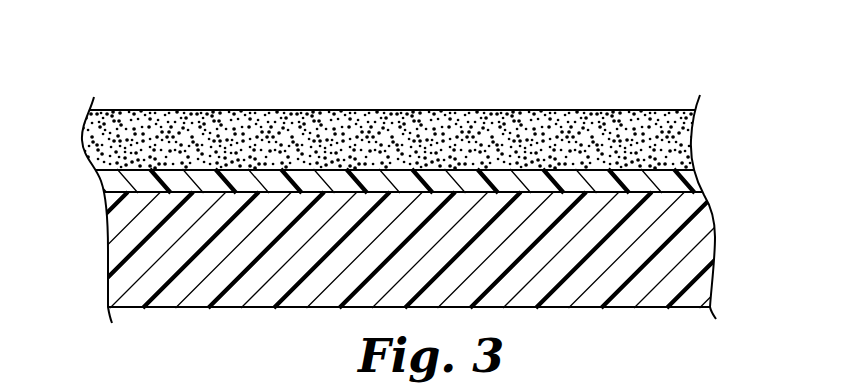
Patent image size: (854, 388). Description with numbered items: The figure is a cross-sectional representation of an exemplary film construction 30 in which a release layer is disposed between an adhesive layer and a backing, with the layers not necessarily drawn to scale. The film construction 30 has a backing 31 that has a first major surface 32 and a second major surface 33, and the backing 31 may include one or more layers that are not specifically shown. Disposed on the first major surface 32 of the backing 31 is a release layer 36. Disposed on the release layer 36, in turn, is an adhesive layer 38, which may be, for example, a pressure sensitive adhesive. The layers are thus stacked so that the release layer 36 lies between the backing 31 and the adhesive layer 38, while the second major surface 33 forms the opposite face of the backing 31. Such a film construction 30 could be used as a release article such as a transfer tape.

The film construction 30 is at (141, 72).
The backing 31 is at (123, 250).
The first major surface 32 is at (673, 188).
The second major surface 33 is at (678, 310).
The release layer 36 is at (110, 182).
The adhesive layer 38 is at (100, 140).